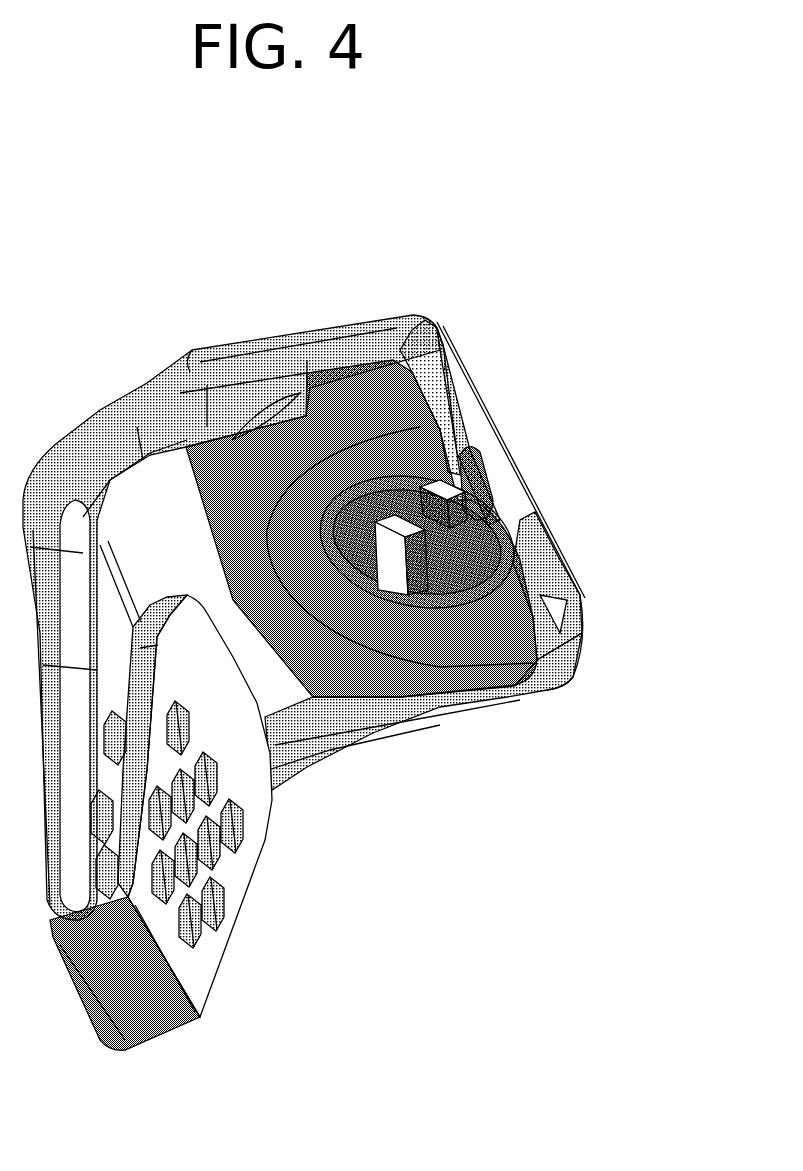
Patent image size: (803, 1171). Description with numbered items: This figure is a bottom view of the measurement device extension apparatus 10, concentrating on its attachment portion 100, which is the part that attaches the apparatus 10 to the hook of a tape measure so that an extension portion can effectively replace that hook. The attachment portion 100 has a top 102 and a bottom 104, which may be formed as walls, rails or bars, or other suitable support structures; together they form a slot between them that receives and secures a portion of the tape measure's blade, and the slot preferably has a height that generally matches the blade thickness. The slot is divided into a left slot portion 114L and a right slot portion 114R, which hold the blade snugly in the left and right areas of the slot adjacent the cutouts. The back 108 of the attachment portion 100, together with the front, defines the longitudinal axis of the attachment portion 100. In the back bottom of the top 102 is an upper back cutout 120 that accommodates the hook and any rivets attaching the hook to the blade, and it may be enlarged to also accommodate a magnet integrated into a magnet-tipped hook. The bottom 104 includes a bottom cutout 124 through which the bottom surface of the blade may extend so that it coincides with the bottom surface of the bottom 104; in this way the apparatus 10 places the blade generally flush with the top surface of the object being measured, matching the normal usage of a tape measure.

The apparatus 10 is at (503, 146).
The attachment portion 100 is at (321, 283).
The top 102 is at (517, 473).
The bottom 104 is at (318, 437).
The back 108 is at (473, 427).
The right slot portion 114R is at (438, 375).
The left slot portion 114L is at (549, 599).
The upper back cutout 120 is at (482, 476).
The bottom cutout 124 is at (450, 566).